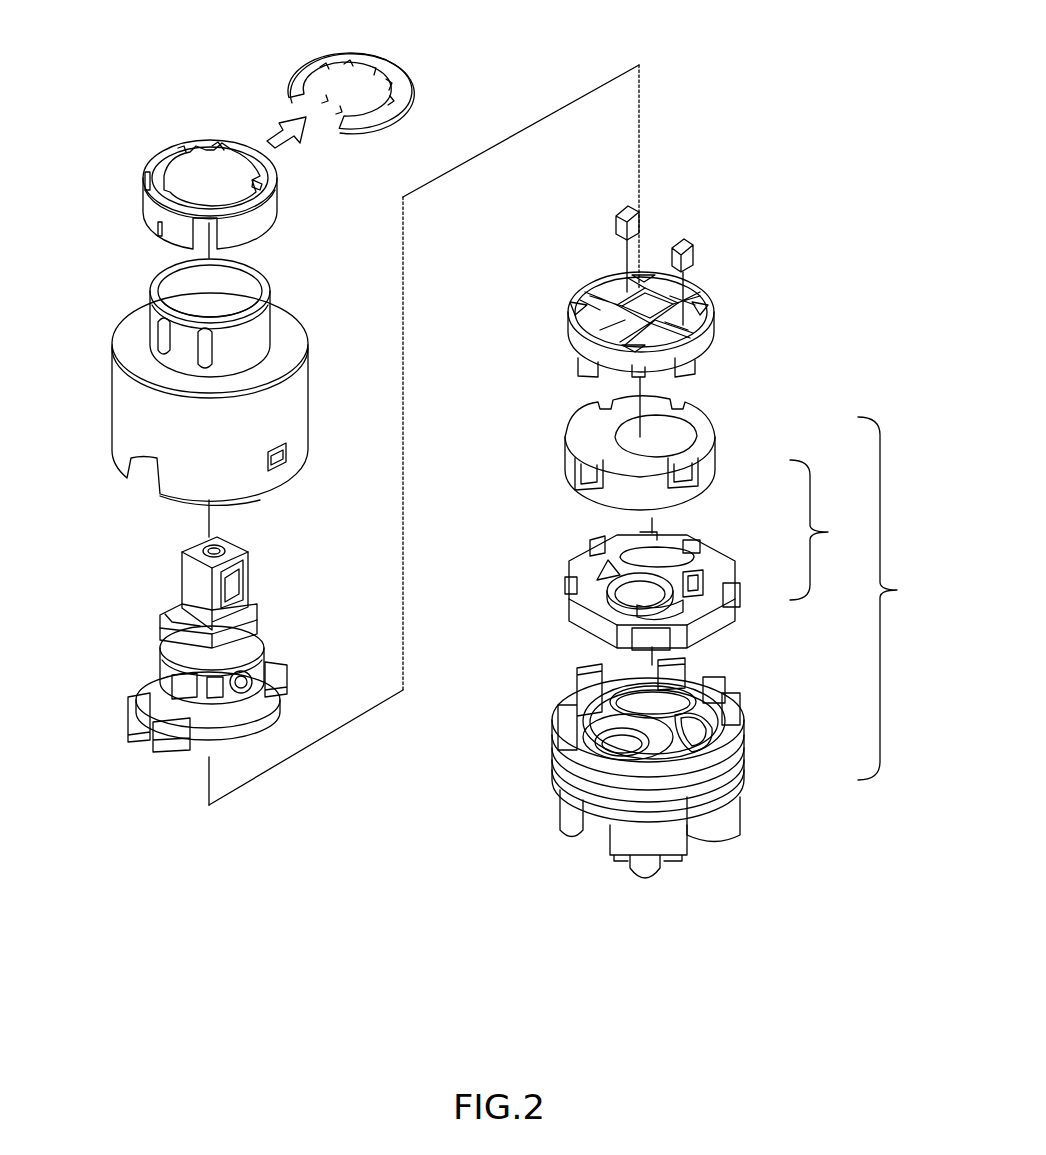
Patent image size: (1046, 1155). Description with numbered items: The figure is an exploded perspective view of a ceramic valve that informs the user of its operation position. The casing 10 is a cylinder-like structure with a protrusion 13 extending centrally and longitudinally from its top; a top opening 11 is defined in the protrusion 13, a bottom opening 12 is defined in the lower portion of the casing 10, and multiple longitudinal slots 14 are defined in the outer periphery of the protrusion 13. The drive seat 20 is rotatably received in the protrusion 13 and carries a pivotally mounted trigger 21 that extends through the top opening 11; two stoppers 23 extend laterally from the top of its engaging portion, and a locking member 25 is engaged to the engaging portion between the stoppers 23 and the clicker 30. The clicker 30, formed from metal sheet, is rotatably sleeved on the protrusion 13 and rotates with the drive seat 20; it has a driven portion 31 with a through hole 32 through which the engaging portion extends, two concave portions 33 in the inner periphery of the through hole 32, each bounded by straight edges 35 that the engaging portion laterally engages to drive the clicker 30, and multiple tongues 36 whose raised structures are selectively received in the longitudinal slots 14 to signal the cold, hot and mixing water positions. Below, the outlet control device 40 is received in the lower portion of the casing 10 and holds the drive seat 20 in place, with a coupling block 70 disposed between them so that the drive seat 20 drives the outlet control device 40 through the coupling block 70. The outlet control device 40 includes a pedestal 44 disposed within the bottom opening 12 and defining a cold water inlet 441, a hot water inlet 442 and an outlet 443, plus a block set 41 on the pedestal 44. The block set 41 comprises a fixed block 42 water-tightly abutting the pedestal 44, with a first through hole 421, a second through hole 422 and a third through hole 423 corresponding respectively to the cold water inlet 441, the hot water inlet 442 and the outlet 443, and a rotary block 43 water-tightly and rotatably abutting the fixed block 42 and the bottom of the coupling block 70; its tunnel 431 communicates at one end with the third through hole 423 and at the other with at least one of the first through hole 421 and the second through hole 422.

The casing 10 is at (133, 410).
The top opening 11 is at (183, 287).
The bottom opening 12 is at (260, 493).
The protrusion 13 is at (257, 337).
The longitudinal slots 14 is at (163, 337).
The drive seat 20 is at (270, 617).
The trigger 21 is at (190, 590).
The stoppers 23 is at (240, 637).
The locking member 25 is at (393, 70).
The clicker 30 is at (292, 184).
The driven portion 31 is at (165, 177).
The through hole 32 is at (203, 180).
The concave portions 33 is at (180, 150).
The straight edge 35 is at (217, 150).
The tongues 36 is at (152, 217).
The outlet control device 40 is at (900, 598).
The block set 41 is at (829, 530).
The fixed block 42 is at (707, 603).
The rotary block 43 is at (703, 467).
The pedestal 44 is at (740, 790).
The coupling block 70 is at (730, 298).
The first through hole 421 is at (630, 557).
The second through hole 422 is at (697, 583).
The third through hole 423 is at (610, 597).
The tunnel 431 is at (697, 430).
The cold water inlet 441 is at (637, 702).
The hot water inlet 442 is at (700, 722).
The outlet 443 is at (617, 733).